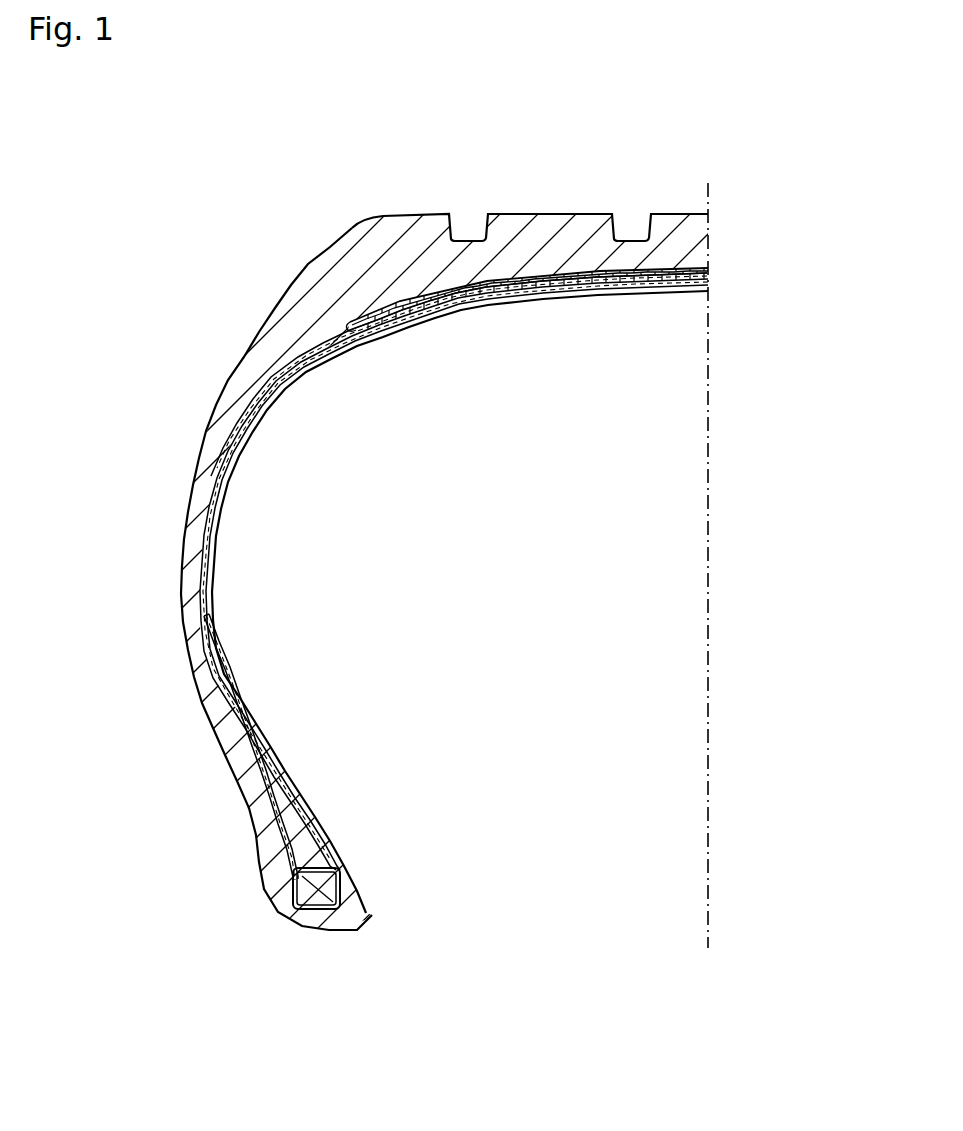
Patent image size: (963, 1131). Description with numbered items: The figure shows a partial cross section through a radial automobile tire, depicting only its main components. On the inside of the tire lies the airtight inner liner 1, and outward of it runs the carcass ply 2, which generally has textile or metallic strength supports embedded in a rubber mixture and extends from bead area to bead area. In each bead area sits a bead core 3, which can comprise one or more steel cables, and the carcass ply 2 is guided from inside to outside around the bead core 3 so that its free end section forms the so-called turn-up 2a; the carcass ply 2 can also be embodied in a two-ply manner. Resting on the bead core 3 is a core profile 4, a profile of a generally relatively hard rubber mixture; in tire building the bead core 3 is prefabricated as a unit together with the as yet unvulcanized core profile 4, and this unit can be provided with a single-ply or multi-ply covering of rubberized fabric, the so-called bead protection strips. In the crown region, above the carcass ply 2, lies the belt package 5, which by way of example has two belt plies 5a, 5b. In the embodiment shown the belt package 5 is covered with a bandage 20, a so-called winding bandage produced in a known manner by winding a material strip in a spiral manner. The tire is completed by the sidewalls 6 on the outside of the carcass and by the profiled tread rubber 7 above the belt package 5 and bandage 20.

The airtight inner liner 1 is at (620, 289).
The carcass ply 2 is at (240, 423).
The turn-ups 2a is at (210, 683).
The bead cores 3 is at (318, 890).
The core profiles 4 is at (268, 795).
The belt package 5 is at (688, 258).
The belt ply 5a is at (357, 317).
The belt ply 5b is at (417, 288).
The sidewalls 6 is at (197, 533).
The profiled tread rubber 7 is at (378, 240).
The bandage 20 is at (520, 277).